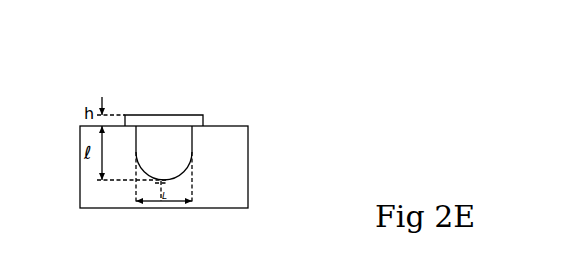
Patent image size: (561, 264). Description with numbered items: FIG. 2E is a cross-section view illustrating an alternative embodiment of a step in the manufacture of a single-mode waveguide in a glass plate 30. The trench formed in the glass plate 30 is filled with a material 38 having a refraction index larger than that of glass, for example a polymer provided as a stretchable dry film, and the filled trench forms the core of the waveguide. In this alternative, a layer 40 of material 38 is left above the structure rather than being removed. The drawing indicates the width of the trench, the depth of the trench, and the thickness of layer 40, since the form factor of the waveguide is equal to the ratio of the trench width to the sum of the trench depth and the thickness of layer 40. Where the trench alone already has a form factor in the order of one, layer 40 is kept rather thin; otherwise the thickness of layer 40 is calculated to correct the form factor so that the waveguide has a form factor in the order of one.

The glass plate 30 is at (225, 165).
The material 38 is at (175, 142).
The layer 40 is at (165, 115).